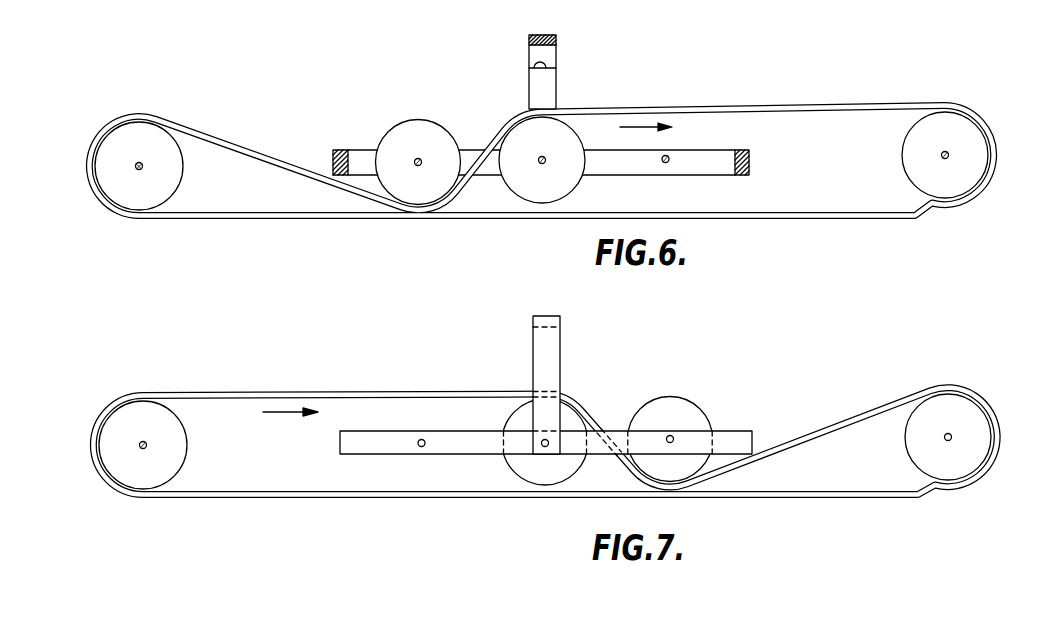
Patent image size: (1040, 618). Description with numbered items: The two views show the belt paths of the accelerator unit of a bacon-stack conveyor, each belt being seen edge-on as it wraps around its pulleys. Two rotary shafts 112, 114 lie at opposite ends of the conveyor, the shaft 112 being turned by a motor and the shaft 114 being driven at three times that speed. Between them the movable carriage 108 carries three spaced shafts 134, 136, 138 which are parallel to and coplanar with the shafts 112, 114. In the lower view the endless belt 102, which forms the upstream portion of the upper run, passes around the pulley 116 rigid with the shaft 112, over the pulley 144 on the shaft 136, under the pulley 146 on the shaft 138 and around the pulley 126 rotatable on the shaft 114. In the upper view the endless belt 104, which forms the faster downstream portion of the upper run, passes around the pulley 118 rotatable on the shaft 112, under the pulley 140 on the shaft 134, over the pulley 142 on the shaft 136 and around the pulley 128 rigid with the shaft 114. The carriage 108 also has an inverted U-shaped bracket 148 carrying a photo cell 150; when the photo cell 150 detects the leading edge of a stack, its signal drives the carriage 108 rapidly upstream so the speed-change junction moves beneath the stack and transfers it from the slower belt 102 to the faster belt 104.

In FIG. 7, the endless belt 102 is at (337, 394).
In FIG. 6, the endless belt 104 is at (243, 148).
In FIG. 6, the movable carriage 108 is at (752, 156).
In FIG. 7, the movable carriage 108 is at (736, 429).
In FIG. 6, the rotary shaft 112 is at (138, 170).
In FIG. 7, the rotary shaft 112 is at (140, 441).
In FIG. 6, the rotary shaft 114 is at (946, 159).
In FIG. 7, the rotary shaft 114 is at (950, 441).
In FIG. 7, the pulley 116 is at (132, 464).
In FIG. 6, the pulley 118 is at (110, 152).
In FIG. 7, the pulley 126 is at (966, 410).
In FIG. 6, the pulley 128 is at (965, 134).
In FIG. 6, the shaft 134 is at (417, 158).
In FIG. 7, the shaft 134 is at (420, 446).
In FIG. 6, the shaft 136 is at (545, 163).
In FIG. 7, the shaft 136 is at (542, 447).
In FIG. 6, the shaft 138 is at (666, 163).
In FIG. 7, the shaft 138 is at (667, 443).
In FIG. 6, the pulley 140 is at (445, 140).
In FIG. 6, the pulley 142 is at (562, 146).
In FIG. 7, the pulley 144 is at (530, 413).
In FIG. 7, the pulley 146 is at (673, 405).
In FIG. 6, the inverted U-shaped bracket 148 is at (550, 36).
In FIG. 7, the inverted U-shaped bracket 148 is at (560, 358).
In FIG. 6, the photo cell 150 is at (553, 55).